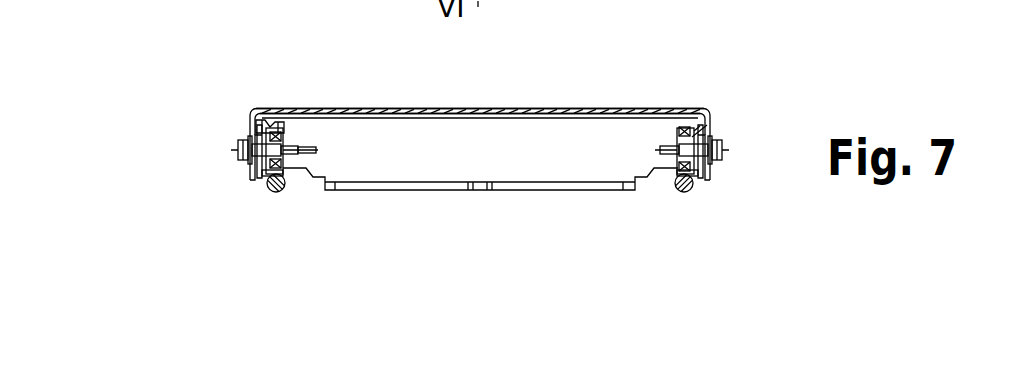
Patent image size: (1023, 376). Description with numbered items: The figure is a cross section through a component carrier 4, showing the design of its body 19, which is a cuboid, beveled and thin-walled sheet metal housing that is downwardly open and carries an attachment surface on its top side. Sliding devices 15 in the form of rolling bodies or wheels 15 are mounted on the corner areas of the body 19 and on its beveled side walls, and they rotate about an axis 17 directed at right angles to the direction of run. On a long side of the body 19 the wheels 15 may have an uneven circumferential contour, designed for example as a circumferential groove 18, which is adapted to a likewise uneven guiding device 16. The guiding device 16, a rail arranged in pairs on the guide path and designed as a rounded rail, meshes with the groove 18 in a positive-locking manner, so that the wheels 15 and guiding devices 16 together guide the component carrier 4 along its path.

The component carrier 4 is at (248, 122).
The sliding device 15 is at (285, 124).
The guiding device 16 is at (265, 182).
The axis 17 is at (303, 147).
The circumferential groove 18 is at (273, 122).
The body 19 is at (603, 108).